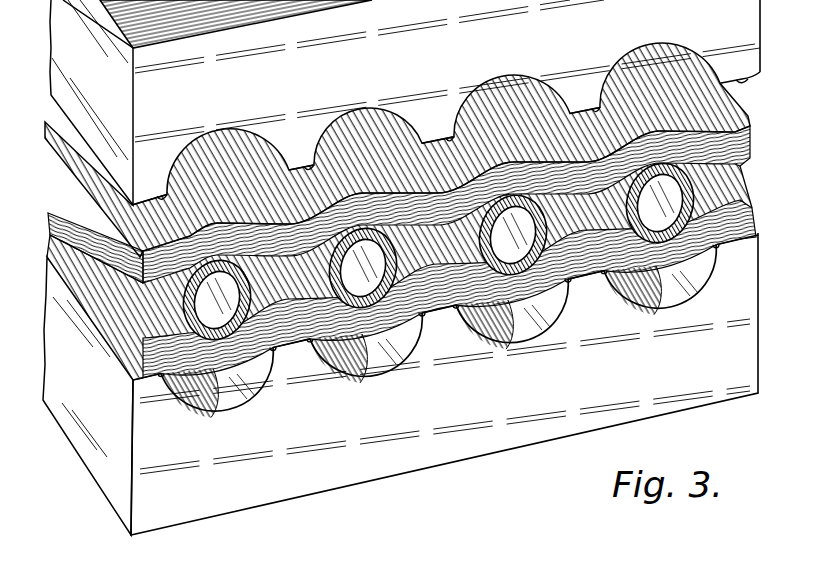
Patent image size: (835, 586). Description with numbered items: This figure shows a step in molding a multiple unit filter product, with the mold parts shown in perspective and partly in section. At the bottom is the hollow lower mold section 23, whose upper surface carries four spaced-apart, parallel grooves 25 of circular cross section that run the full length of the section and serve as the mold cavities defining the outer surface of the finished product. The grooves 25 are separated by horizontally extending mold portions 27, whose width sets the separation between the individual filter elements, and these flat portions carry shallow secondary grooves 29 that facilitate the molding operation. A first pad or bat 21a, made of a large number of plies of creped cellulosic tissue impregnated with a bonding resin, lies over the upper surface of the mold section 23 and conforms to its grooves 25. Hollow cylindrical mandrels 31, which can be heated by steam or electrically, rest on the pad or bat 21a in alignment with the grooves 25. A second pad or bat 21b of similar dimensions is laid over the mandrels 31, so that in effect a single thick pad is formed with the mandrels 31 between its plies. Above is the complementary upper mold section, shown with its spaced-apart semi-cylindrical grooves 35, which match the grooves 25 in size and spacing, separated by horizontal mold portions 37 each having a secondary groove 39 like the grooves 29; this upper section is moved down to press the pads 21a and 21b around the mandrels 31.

The pad or bat 21a is at (745, 201).
The second pad or bat 21b is at (737, 117).
The hollow mold section 23 is at (437, 464).
The grooves 25 is at (219, 418).
The horizontally extending mold portions 27 is at (136, 382).
The secondary grooves 29 is at (291, 349).
The mandrels 31 is at (249, 293).
The semi-cylindrical grooves 35 is at (244, 127).
The horizontal mold portions 37 is at (160, 180).
The secondary groove 39 is at (158, 198).